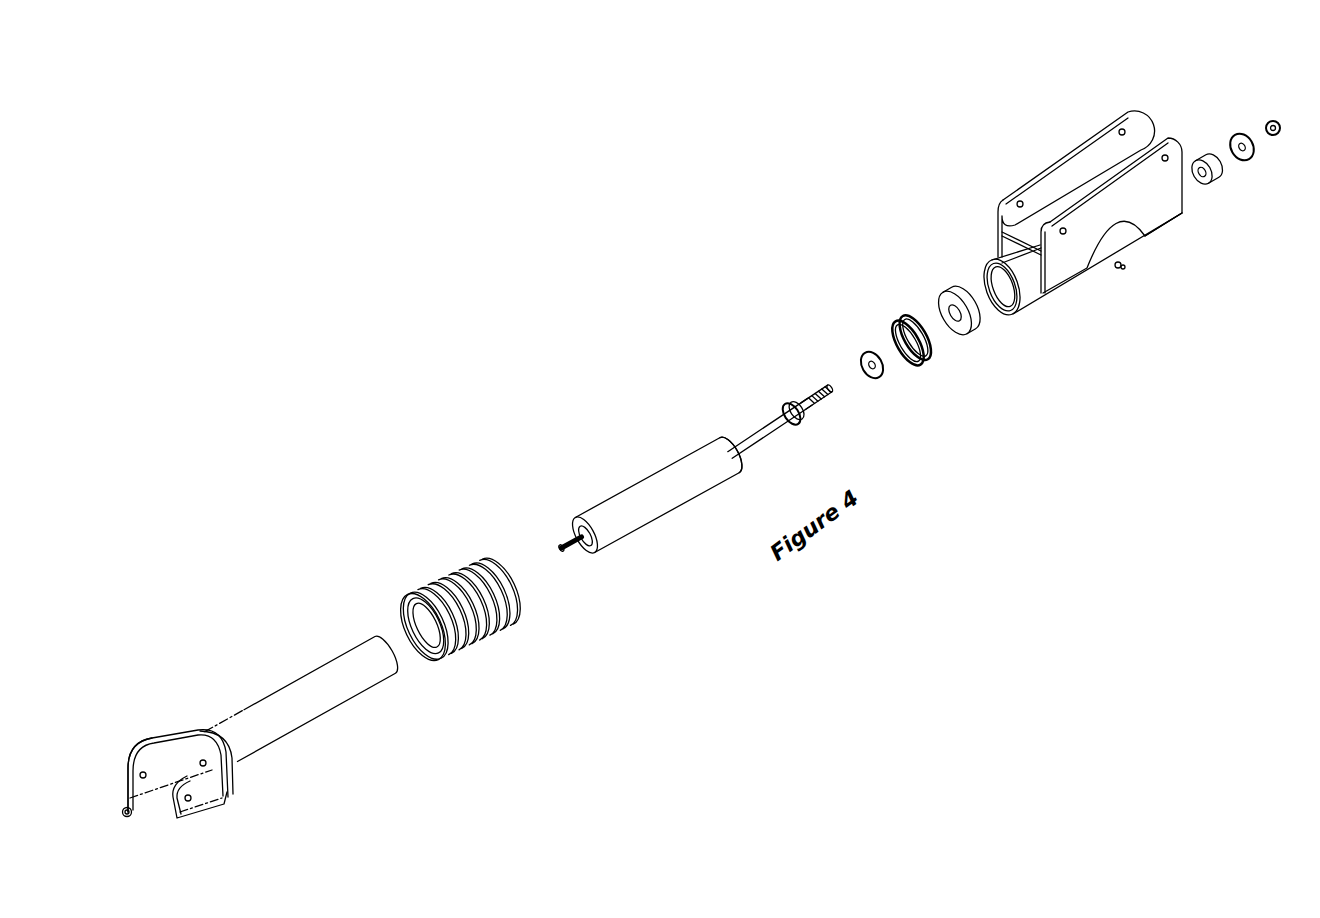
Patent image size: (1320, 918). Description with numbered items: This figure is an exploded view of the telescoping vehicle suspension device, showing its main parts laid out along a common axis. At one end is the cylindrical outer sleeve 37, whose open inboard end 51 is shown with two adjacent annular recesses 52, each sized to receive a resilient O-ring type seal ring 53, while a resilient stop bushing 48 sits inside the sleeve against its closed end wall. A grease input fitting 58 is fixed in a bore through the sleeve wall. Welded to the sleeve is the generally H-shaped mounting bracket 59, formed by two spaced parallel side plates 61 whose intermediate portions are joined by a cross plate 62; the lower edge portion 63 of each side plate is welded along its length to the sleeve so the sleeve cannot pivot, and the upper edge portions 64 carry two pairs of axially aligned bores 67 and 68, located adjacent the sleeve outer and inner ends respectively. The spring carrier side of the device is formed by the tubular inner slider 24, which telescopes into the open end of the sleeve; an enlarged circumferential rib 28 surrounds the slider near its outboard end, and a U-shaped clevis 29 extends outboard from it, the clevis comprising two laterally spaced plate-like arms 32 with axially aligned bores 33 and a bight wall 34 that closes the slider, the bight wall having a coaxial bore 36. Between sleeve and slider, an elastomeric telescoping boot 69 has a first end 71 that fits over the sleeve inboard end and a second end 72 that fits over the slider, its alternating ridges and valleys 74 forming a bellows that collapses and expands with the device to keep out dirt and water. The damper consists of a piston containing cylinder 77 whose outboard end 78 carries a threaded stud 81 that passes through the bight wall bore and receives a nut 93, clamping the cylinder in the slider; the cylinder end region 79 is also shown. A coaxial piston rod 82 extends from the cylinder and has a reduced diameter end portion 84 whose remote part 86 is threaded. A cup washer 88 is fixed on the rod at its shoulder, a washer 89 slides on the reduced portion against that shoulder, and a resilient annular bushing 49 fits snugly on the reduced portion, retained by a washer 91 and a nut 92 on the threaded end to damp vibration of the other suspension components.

The tubular inner slider 24 is at (305, 725).
The circumferential rib 28 is at (205, 733).
The U-shaped clevis 29 is at (460, 601).
The plate-like arms 32 is at (152, 757).
The axially aligned bores 33 is at (190, 800).
The bight wall 34 is at (190, 750).
The bore 36 is at (206, 766).
The outer sleeve 37 is at (1040, 293).
The stop bushing 48 is at (945, 300).
The resilient annular bushing 49 is at (1218, 177).
The open inboard end 51 is at (1004, 299).
The annular recesses 52 is at (1007, 310).
The resilient seal ring 53 is at (920, 358).
The grease input fitting 58 is at (1122, 268).
The mounting bracket 59 is at (1088, 220).
The side plates 61 is at (1057, 170).
The cross plate 62 is at (1015, 228).
The lower edge portion 63 is at (1165, 212).
The upper edge portions 64 is at (1107, 118).
The bores 67 is at (1130, 137).
The bores 68 is at (1019, 201).
The telescoping boot 69 is at (450, 615).
The first end 71 is at (487, 563).
The second end 72 is at (410, 603).
The ridges and valleys 74 is at (477, 640).
The piston containing cylinder 77 is at (656, 486).
The cylinder outboard end 78 is at (593, 550).
The cylinder end 79 is at (732, 465).
The threaded stud 81 is at (566, 543).
The piston rod 82 is at (213, 812).
The reduced diameter end portion 84 is at (815, 400).
The threaded remote part 86 is at (835, 385).
The cup washer 88 is at (790, 402).
The washer 89 is at (880, 380).
The washer 91 is at (1240, 137).
The nut 92 is at (1273, 120).
The nut 93 is at (126, 804).